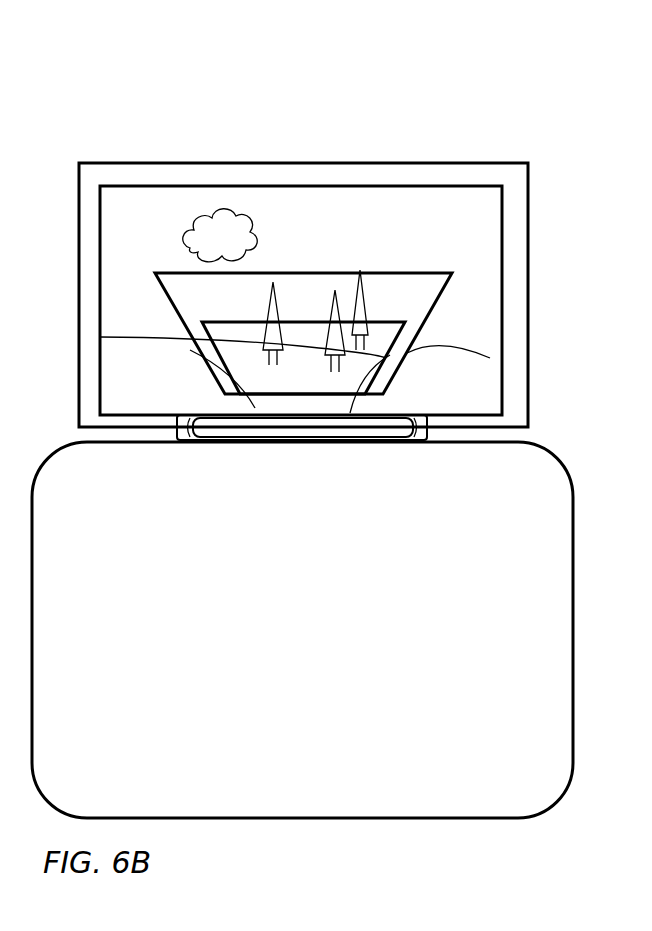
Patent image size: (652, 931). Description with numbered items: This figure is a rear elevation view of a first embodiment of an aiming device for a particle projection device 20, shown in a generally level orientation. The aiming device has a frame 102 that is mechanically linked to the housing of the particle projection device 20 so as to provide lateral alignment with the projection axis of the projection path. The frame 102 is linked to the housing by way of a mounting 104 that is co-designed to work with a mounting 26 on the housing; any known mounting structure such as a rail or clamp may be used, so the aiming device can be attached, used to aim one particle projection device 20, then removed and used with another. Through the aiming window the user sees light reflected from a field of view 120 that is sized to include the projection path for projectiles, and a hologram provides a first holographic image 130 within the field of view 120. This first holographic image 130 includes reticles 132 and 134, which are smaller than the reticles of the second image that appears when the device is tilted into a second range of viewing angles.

The particle projection device 20 is at (302, 630).
The frame 102 is at (91, 163).
The field of view 120 is at (227, 192).
The first holographic image 130 is at (462, 260).
The reticle 134 is at (388, 297).
The reticle 132 is at (385, 358).
The mounting 26 is at (437, 422).
The mounting 104 is at (353, 428).